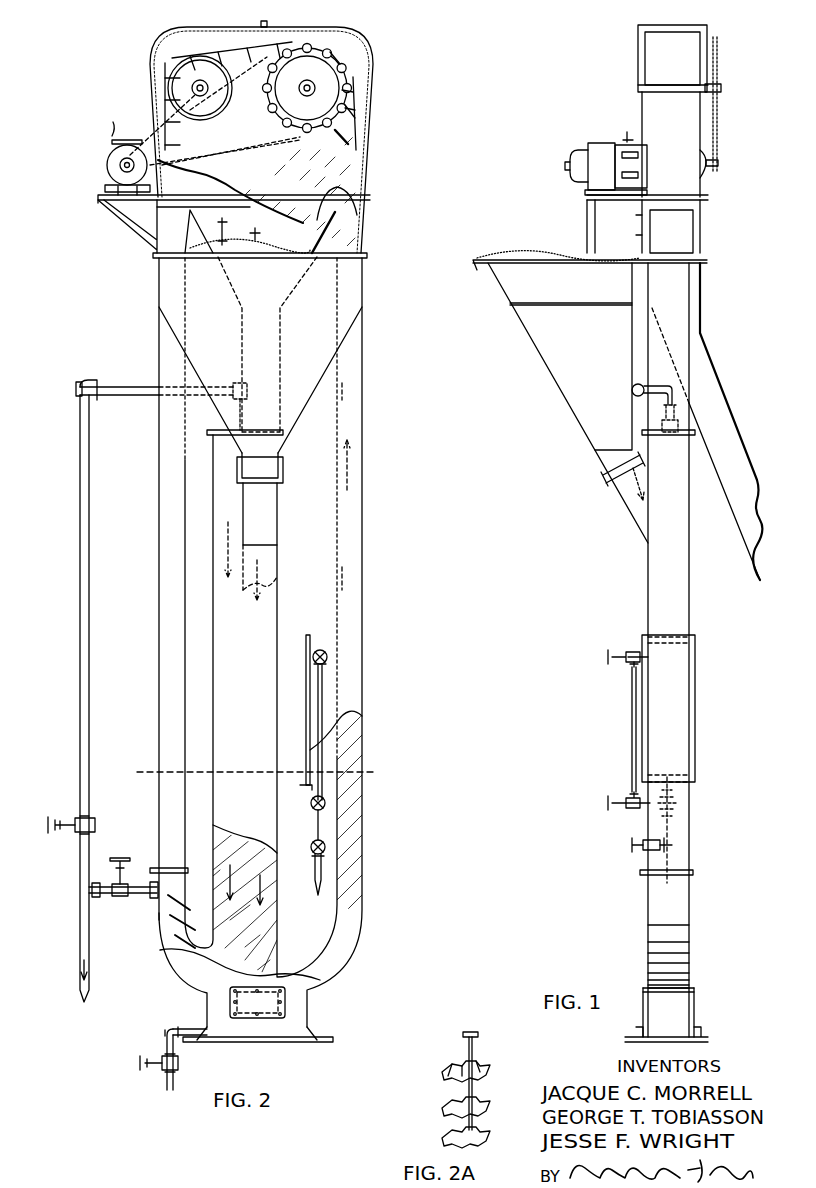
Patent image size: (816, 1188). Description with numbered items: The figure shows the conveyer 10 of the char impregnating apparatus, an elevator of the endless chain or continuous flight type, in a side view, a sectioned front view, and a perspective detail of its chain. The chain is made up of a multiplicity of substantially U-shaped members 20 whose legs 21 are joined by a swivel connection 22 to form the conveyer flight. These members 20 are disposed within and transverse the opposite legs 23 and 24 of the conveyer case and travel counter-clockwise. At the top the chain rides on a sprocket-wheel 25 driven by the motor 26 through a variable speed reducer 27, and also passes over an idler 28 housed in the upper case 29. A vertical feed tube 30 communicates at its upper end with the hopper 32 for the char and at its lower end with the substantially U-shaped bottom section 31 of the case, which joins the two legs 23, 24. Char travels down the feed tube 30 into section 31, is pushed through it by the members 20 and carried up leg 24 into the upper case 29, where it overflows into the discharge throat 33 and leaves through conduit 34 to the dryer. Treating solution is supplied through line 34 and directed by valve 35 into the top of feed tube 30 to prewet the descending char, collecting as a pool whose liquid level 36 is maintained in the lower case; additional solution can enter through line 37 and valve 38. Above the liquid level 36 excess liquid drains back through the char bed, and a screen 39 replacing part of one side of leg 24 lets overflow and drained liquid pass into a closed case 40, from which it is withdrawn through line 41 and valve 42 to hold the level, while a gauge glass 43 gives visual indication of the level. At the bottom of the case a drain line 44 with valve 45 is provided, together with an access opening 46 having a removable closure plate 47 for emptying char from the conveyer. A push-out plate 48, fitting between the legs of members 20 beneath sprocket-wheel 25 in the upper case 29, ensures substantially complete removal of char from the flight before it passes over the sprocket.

In FIG. 2, the conveyer 10 is at (370, 520).
In FIG. 1, the conveyer 10 is at (645, 567).
In FIG. 2, the U-shaped members 20 is at (172, 122).
In FIG. 2A, the U-shaped members 20 is at (452, 1070).
In FIG. 2A, the legs 21 is at (473, 1056).
In FIG. 2A, the swivel connection 22 is at (466, 1079).
In FIG. 2, the leg 23 is at (162, 448).
In FIG. 2, the leg 24 is at (365, 440).
In FIG. 1, the leg 24 is at (690, 623).
In FIG. 2, the sprocket-wheel 25 is at (350, 81).
In FIG. 2, the motor 26 is at (112, 162).
In FIG. 1, the motor 26 is at (603, 148).
In FIG. 2, the variable speed reducer 27 is at (120, 140).
In FIG. 1, the variable speed reducer 27 is at (627, 132).
In FIG. 2, the idler 28 is at (171, 78).
In FIG. 2, the upper case 29 is at (278, 30).
In FIG. 1, the upper case 29 is at (660, 38).
In FIG. 2, the feed tube 30 is at (270, 606).
In FIG. 2, the U-shaped bottom section 31 is at (334, 976).
In FIG. 1, the U-shaped bottom section 31 is at (680, 966).
In FIG. 2, the hopper 32 is at (295, 423).
In FIG. 1, the hopper 32 is at (545, 354).
In FIG. 2, the discharge throat 33 is at (285, 303).
In FIG. 2, the conduit 34 is at (140, 394).
In FIG. 1, the conduit 34 is at (740, 448).
In FIG. 2, the valve 35 is at (95, 826).
In FIG. 2, the liquid level 36 is at (150, 772).
In FIG. 2, the line 37 is at (98, 895).
In FIG. 2, the valve 38 is at (125, 896).
In FIG. 2, the screen 39 is at (345, 762).
In FIG. 2, the closed case 40 is at (322, 648).
In FIG. 1, the closed case 40 is at (695, 700).
In FIG. 2, the line 41 is at (311, 830).
In FIG. 1, the line 41 is at (672, 824).
In FIG. 2, the valve 42 is at (311, 848).
In FIG. 1, the valve 42 is at (674, 846).
In FIG. 2, the gauge glass 43 is at (324, 700).
In FIG. 1, the gauge glass 43 is at (632, 697).
In FIG. 2, the drain line 44 is at (188, 1030).
In FIG. 2, the valve 45 is at (178, 1063).
In FIG. 2, the access opening 46 is at (300, 995).
In FIG. 2, the removable closure plate 47 is at (286, 1010).
In FIG. 2, the push-out plate 48 is at (336, 138).